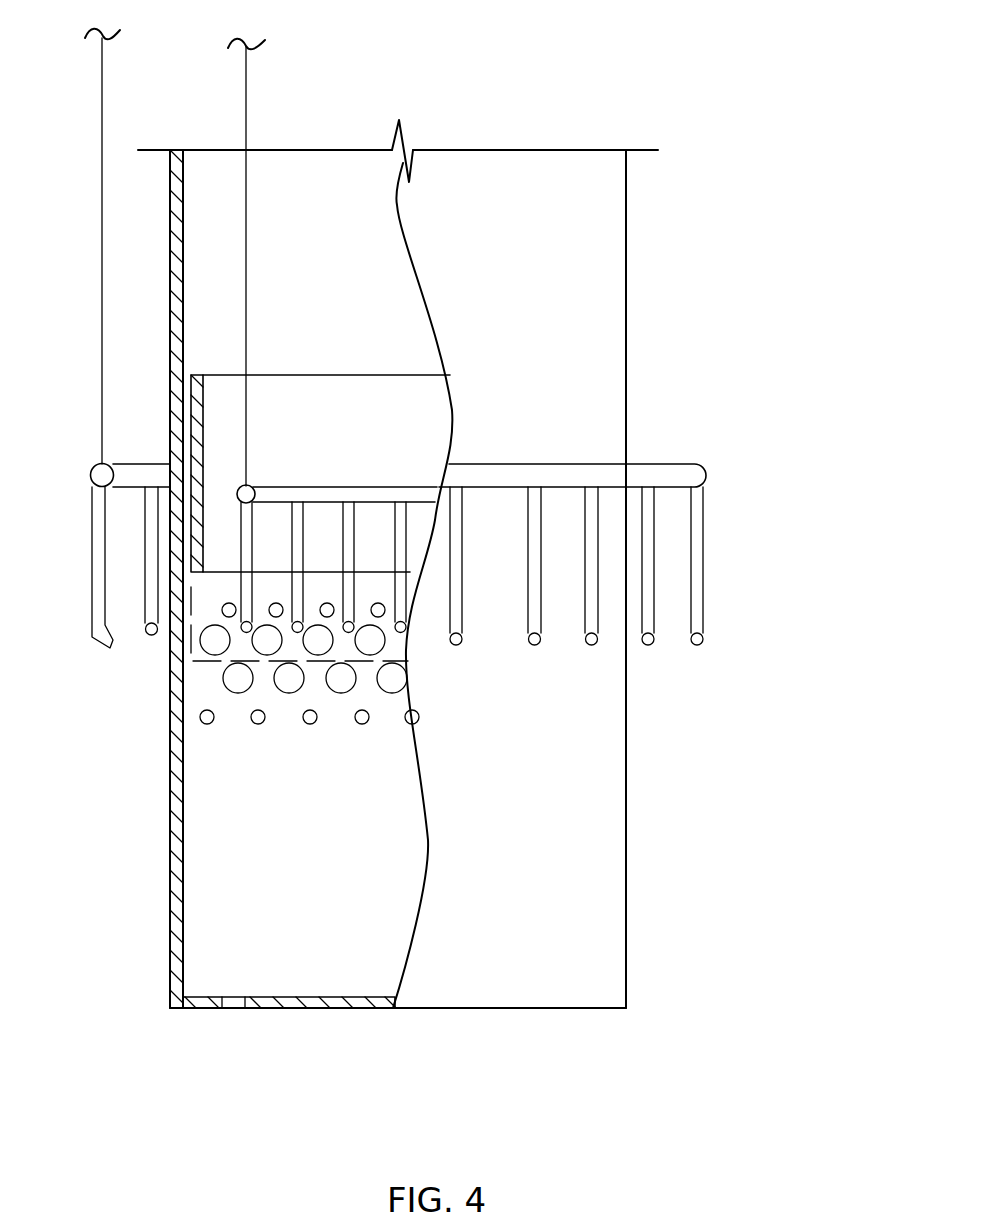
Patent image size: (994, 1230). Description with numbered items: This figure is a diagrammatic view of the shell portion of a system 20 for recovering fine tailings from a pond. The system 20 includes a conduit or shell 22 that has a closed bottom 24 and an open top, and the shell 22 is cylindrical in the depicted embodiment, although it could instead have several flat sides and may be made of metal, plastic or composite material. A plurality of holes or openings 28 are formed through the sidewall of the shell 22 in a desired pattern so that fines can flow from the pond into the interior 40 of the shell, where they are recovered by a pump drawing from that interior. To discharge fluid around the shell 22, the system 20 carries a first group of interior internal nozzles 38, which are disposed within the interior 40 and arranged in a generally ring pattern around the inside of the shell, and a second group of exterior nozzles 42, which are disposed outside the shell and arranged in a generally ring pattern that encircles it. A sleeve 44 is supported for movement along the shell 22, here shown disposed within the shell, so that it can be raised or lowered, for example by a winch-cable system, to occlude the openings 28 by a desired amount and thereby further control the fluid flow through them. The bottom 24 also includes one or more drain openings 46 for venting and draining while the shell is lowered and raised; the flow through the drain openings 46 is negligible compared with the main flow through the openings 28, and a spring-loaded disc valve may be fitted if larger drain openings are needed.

The system 20 is at (743, 62).
The shell 22 is at (626, 247).
The closed bottom 24 is at (335, 1003).
The openings 28 is at (173, 633).
The interior internal nozzles 38 is at (352, 464).
The interior 40 is at (207, 886).
The exterior nozzles 42 is at (666, 441).
The sleeve 44 is at (295, 387).
The drain openings 46 is at (234, 1003).